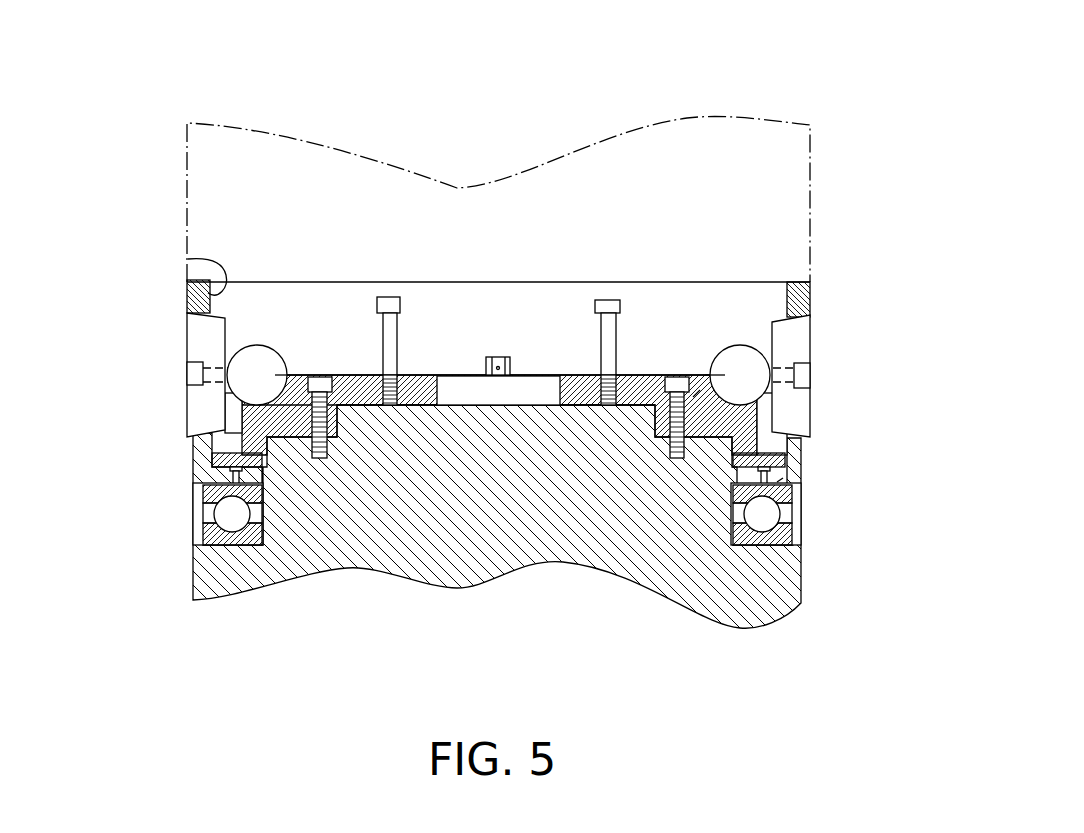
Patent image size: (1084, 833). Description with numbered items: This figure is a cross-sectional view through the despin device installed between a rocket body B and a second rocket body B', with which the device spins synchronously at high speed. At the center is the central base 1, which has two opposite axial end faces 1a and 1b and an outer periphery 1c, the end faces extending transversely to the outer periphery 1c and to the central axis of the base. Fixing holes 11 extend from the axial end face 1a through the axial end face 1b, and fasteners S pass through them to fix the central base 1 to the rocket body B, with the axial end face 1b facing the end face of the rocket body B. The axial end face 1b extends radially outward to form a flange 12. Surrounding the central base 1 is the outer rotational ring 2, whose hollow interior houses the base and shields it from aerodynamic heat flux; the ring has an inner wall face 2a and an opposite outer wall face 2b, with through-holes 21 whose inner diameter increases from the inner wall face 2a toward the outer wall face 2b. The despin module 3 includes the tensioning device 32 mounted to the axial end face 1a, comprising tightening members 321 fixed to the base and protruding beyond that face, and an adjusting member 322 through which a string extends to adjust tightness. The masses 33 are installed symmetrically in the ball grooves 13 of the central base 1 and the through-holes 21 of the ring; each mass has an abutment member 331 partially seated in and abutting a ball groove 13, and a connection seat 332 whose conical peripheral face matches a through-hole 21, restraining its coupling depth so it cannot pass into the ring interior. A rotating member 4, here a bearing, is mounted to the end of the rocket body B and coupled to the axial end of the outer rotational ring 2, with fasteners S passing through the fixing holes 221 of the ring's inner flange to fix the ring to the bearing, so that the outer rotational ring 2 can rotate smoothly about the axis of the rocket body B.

The central base 1 is at (456, 368).
The axial end face 1a is at (352, 373).
The axial end face 1b is at (373, 405).
The outer periphery 1c is at (237, 423).
The outer rotational ring 2 is at (138, 283).
The inner wall face 2a is at (188, 259).
The outer wall face 2b is at (188, 298).
The despin module 3 is at (565, 385).
The rotating member 4 is at (783, 535).
The fixing holes 11 is at (693, 397).
The flange 12 is at (197, 445).
The ball grooves 13 is at (775, 445).
The through-holes 21 is at (810, 328).
The tensioning device 32 is at (498, 225).
The masses 33 is at (565, 385).
The fixing holes 221 is at (777, 482).
The tightening members 321 is at (608, 300).
The adjusting member 322 is at (498, 357).
The abutment member 331 is at (748, 355).
The connection seat 332 is at (797, 405).
The rocket body B is at (531, 521).
The rocket body B' is at (498, 144).
The fasteners S is at (738, 436).